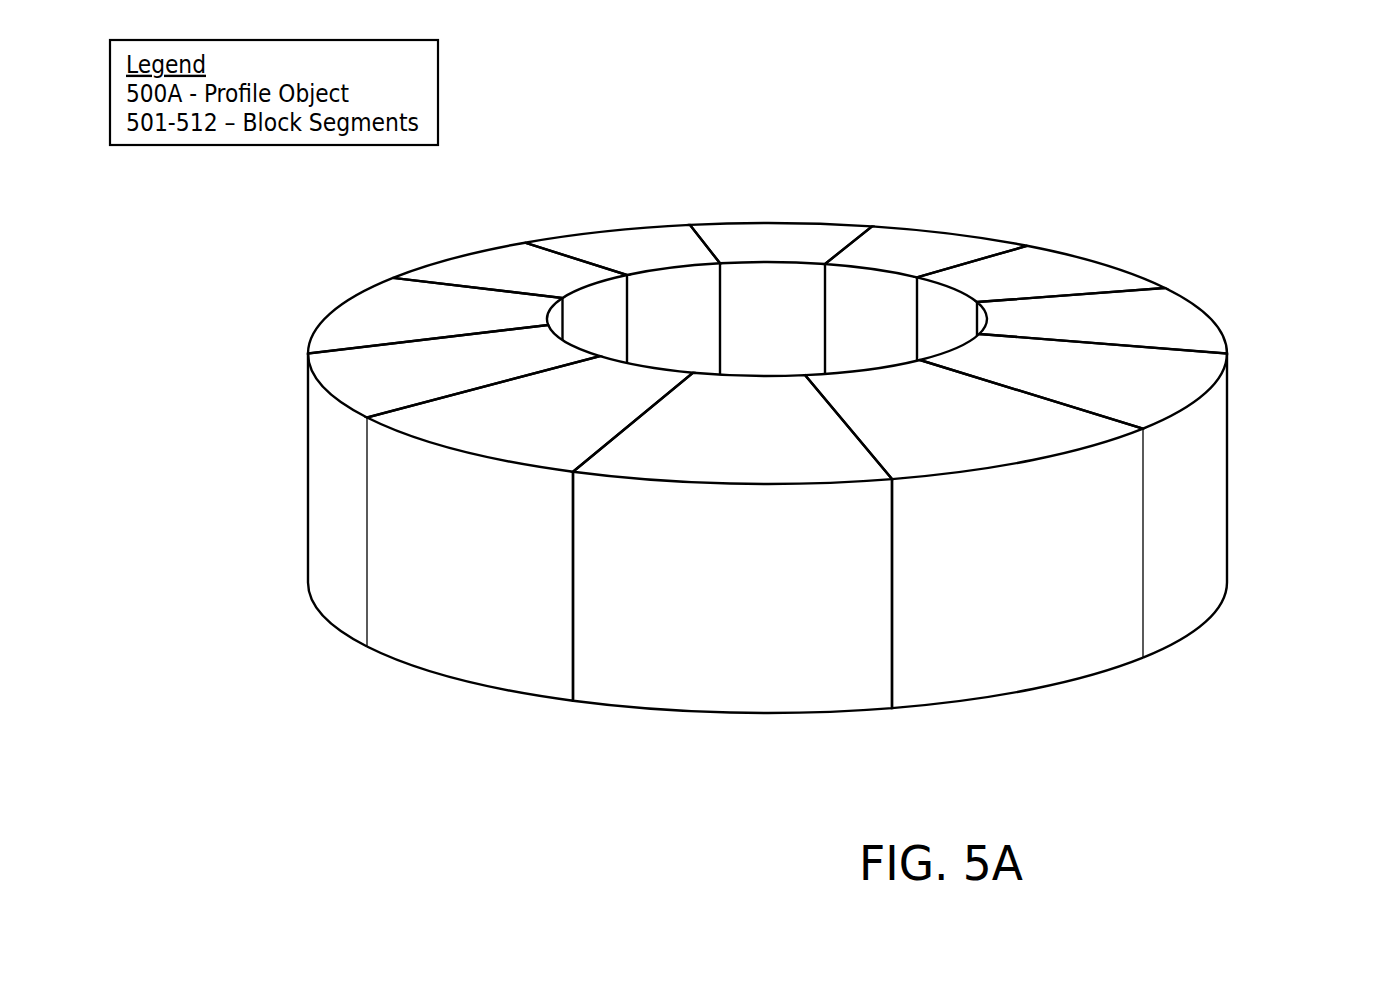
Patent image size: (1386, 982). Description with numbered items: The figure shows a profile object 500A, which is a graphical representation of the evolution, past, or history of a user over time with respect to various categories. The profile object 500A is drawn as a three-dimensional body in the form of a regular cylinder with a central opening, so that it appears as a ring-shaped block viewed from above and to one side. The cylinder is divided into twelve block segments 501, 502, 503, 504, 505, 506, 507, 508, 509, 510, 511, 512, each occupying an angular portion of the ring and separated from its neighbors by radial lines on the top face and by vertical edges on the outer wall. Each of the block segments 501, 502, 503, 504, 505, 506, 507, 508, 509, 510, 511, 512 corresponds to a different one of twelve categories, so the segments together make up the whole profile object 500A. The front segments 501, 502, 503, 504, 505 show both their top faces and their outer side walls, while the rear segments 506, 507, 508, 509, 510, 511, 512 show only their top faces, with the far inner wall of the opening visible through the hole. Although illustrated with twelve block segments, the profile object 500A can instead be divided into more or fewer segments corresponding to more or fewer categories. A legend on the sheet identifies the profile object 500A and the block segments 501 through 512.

The profile object 500A is at (1028, 113).
The block segment 501 is at (305, 605).
The block segment 502 is at (473, 700).
The block segment 503 is at (762, 728).
The block segment 504 is at (1032, 712).
The block segment 505 is at (1235, 610).
The block segment 506 is at (1255, 320).
The block segment 507 is at (1113, 248).
The block segment 508 is at (965, 217).
The block segment 509 is at (795, 210).
The block segment 510 is at (597, 210).
The block segment 511 is at (440, 253).
The block segment 512 is at (323, 306).